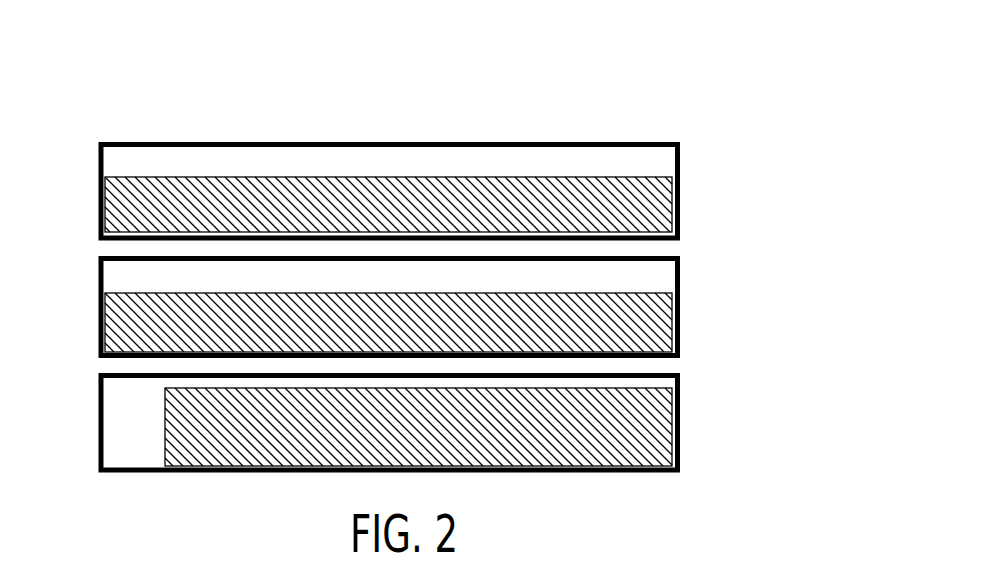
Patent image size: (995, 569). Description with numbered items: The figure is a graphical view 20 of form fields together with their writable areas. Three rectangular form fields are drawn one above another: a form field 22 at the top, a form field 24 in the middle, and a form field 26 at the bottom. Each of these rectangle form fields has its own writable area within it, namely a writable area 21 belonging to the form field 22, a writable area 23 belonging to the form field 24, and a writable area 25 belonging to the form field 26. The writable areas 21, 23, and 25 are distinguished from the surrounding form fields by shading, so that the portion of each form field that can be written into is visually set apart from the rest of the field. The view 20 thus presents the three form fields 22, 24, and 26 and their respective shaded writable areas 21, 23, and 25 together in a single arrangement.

The graphical view of form fields 20 is at (712, 108).
The writable area 21 is at (100, 207).
The form field 22 is at (697, 198).
The writable area 23 is at (100, 322).
The form field 24 is at (697, 309).
The writable area 25 is at (165, 428).
The form field 26 is at (697, 419).